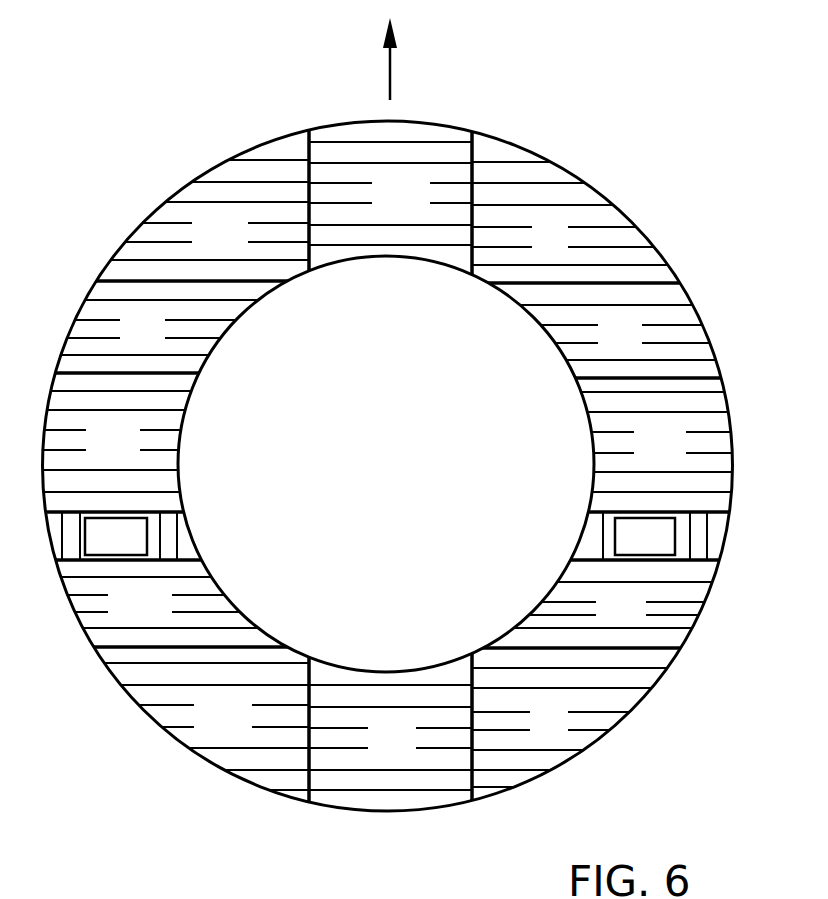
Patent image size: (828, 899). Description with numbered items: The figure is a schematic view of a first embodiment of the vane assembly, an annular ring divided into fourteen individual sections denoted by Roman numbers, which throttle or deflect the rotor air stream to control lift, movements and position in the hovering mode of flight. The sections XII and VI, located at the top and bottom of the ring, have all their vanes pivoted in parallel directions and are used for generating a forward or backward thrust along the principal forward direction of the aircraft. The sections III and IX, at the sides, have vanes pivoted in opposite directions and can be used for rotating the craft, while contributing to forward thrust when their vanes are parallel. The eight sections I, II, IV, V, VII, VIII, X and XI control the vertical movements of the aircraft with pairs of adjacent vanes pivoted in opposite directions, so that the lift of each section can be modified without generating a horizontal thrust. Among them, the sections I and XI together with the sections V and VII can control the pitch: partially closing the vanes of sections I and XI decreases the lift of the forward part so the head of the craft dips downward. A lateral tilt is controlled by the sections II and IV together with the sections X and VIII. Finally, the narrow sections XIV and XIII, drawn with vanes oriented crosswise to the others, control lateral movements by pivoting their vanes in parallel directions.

The vane assembly section I is at (650, 213).
The vane assembly section II is at (607, 332).
The vane assembly section III is at (607, 442).
The vane assembly section IV is at (607, 605).
The vane assembly section V is at (650, 727).
The vane assembly section VI is at (390, 737).
The vane assembly section VII is at (154, 726).
The vane assembly section VIII is at (193, 602).
The vane assembly section IX is at (193, 441).
The vane assembly section X is at (193, 327).
The vane assembly section XI is at (154, 210).
The vane assembly section XII is at (390, 193).
The vane assembly section XIII is at (655, 536).
The vane assembly section XIV is at (119, 536).